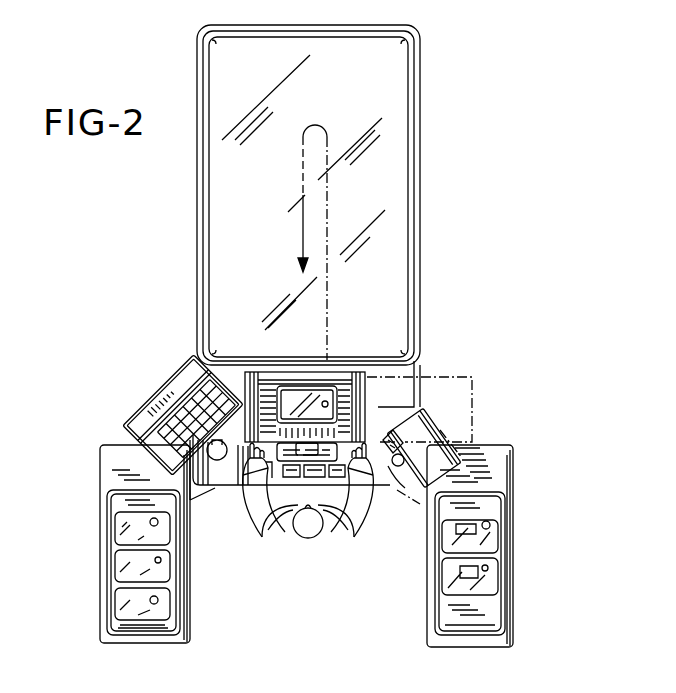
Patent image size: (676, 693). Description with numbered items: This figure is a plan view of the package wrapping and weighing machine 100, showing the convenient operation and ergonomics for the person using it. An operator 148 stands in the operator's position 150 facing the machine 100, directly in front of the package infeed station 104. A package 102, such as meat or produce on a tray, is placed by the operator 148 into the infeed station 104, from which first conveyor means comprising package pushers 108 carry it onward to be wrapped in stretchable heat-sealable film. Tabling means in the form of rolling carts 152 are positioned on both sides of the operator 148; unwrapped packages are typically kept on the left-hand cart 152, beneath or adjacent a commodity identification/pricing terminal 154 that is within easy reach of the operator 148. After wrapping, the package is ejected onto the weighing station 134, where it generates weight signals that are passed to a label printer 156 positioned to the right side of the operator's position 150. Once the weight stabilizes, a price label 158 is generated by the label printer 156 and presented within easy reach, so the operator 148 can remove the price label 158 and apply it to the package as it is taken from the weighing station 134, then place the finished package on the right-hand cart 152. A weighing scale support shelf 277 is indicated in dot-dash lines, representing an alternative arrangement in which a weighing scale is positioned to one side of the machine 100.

The package wrapping and weighing machine 100 is at (434, 170).
The package 102 is at (314, 455).
The package infeed station 104 is at (270, 468).
The package pushers 108 is at (283, 462).
The weighing station 134 is at (342, 370).
The operator 148 is at (337, 534).
The operator's position 150 is at (287, 602).
The rolling carts 152 is at (104, 446).
The commodity identification/pricing terminal 154 is at (147, 402).
The label printer 156 is at (480, 456).
The price label 158 is at (432, 524).
The weighing scale support shelf 277 is at (473, 377).